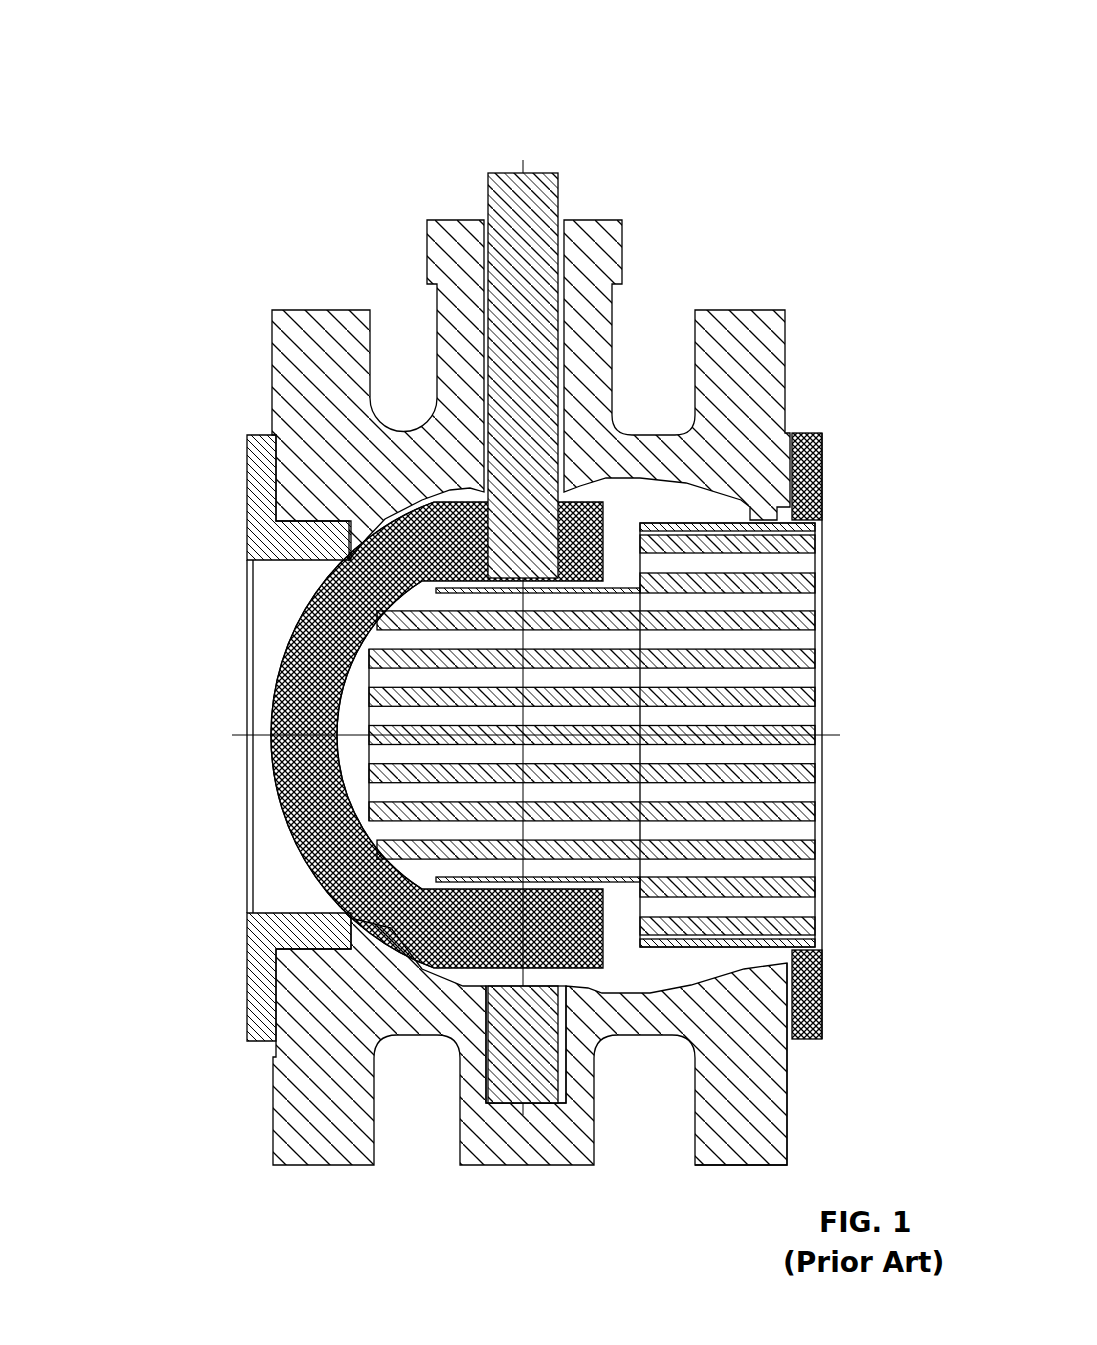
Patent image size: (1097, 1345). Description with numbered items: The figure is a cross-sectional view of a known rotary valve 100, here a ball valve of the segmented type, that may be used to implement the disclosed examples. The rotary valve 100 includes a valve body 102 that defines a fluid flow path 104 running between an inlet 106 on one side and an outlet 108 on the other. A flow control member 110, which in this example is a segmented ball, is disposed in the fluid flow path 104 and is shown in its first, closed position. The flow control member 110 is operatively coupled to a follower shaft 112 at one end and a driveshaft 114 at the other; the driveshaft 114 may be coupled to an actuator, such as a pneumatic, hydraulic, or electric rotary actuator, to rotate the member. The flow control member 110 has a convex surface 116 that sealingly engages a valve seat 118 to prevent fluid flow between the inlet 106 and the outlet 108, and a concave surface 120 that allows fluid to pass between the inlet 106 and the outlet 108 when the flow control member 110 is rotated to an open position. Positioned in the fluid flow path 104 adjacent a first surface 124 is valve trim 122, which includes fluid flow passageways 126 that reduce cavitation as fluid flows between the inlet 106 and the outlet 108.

The rotary valve 100 is at (862, 52).
The valve body 102 is at (763, 352).
The fluid flow path 104 is at (134, 742).
The inlet 106 is at (215, 584).
The outlet 108 is at (893, 577).
The flow control member 110 is at (298, 710).
The follower shaft 112 is at (540, 1075).
The driveshaft 114 is at (548, 185).
The convex surface 116 is at (293, 650).
The valve seat 118 is at (340, 905).
The concave surface 120 is at (330, 800).
The valve trim 122 is at (813, 872).
The first surface 124 is at (787, 1067).
The fluid flow passageways 126 is at (795, 825).